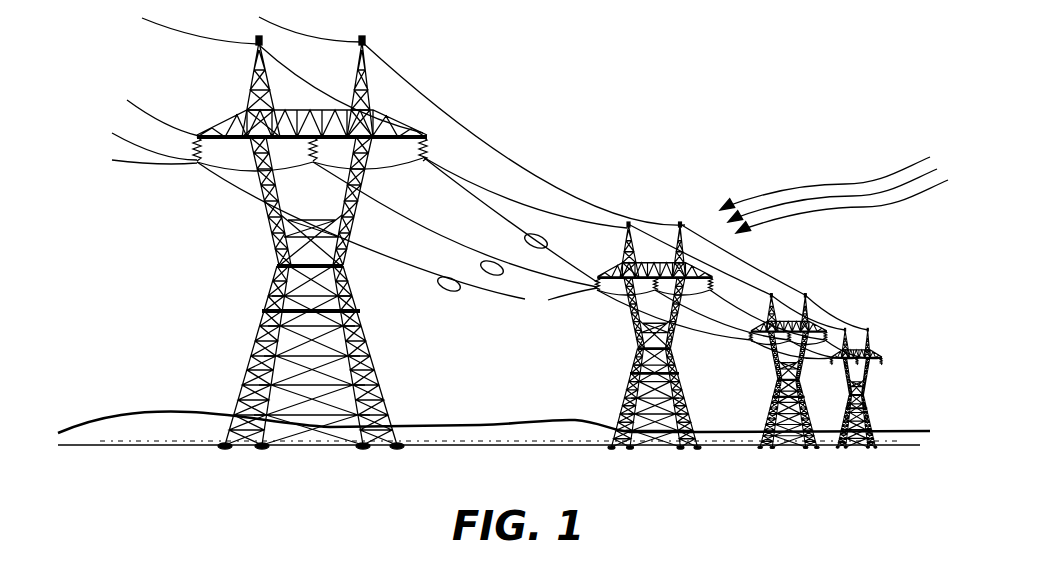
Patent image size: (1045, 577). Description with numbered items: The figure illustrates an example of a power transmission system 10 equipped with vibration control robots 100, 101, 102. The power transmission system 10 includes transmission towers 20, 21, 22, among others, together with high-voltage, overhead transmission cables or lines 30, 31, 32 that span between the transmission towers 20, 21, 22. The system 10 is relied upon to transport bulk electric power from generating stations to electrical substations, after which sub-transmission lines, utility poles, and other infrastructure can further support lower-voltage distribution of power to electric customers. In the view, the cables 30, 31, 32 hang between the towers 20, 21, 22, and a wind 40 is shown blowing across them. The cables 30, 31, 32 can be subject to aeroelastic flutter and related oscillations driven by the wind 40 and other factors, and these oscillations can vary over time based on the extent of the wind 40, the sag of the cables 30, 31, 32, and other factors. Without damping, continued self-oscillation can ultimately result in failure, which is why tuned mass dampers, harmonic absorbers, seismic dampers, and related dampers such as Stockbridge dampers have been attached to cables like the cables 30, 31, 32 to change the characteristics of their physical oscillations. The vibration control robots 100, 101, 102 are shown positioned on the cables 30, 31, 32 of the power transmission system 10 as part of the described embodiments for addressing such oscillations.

The power transmission system 10 is at (92, 62).
The transmission tower 20 is at (278, 267).
The transmission tower 21 is at (640, 349).
The transmission tower 22 is at (775, 380).
The transmission cable 30 is at (562, 259).
The transmission cable 31 is at (456, 249).
The transmission cable 32 is at (348, 247).
The wind 40 is at (866, 171).
The vibration control robot 100 is at (538, 248).
The vibration control robot 101 is at (492, 275).
The vibration control robot 102 is at (449, 291).